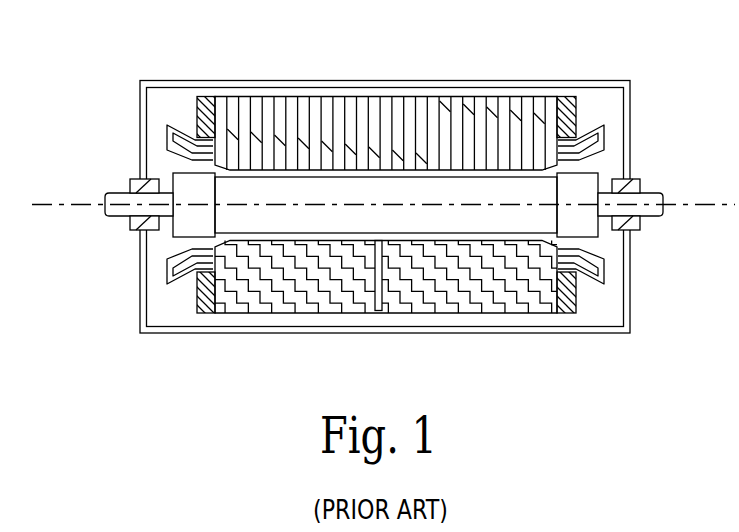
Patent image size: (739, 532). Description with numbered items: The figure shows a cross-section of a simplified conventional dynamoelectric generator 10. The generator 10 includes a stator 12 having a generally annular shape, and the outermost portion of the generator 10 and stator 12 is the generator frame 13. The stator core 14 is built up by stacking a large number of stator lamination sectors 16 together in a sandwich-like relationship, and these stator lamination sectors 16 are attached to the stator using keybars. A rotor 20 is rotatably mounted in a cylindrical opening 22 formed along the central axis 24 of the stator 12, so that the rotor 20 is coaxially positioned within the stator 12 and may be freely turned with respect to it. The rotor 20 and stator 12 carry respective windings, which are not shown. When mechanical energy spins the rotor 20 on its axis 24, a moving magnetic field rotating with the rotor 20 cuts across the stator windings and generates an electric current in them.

The dynamoelectric generator 10 is at (382, 209).
The stator 12 is at (497, 95).
The generator frame 13 is at (218, 83).
The stator core 14 is at (283, 97).
The stator lamination sectors 16 is at (383, 97).
The rotor 20 is at (540, 217).
The cylindrical opening 22 is at (545, 170).
The central axis 24 is at (58, 204).